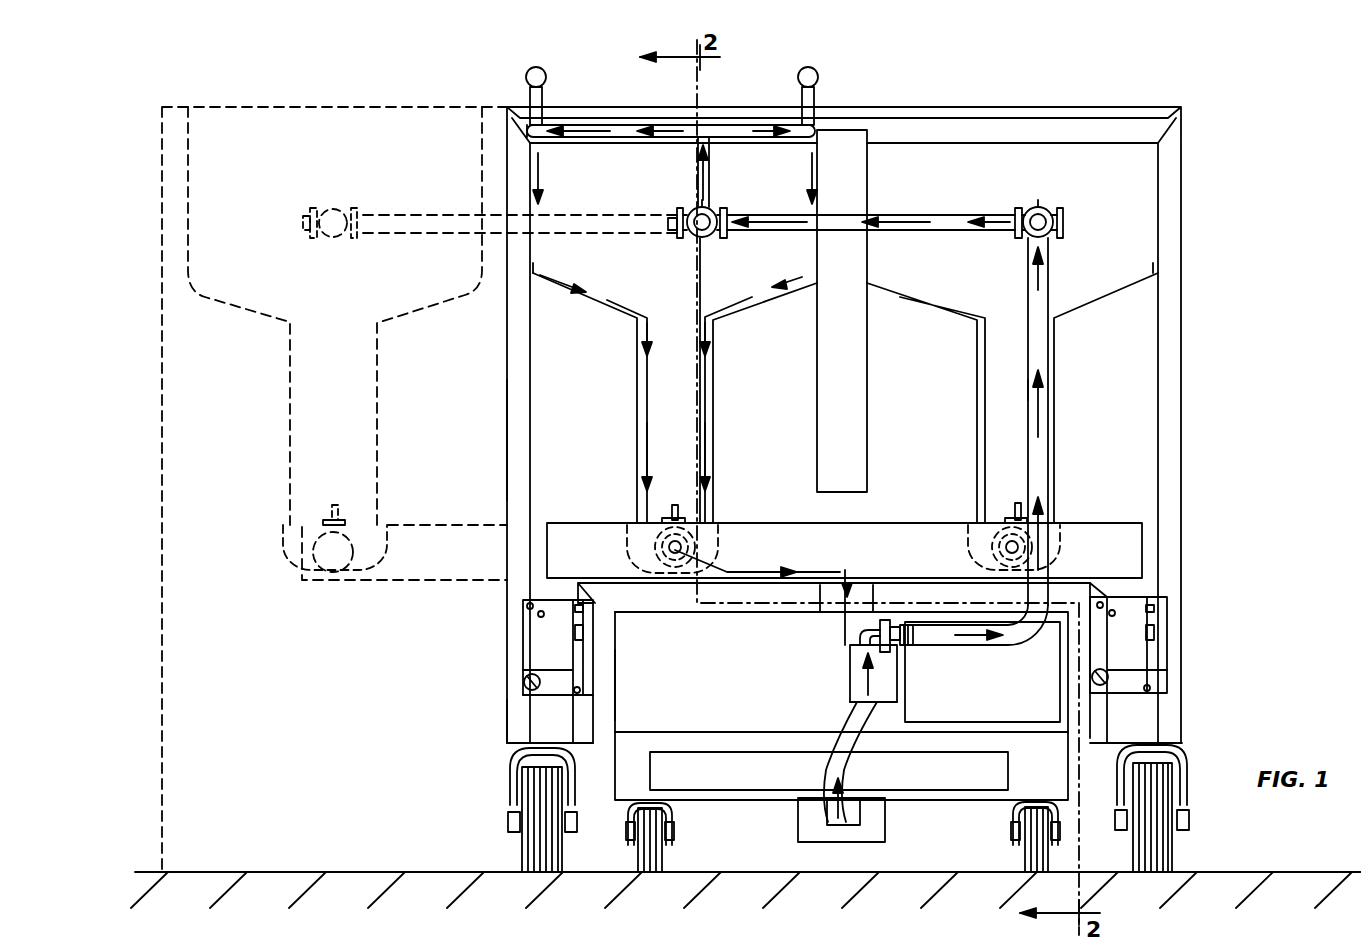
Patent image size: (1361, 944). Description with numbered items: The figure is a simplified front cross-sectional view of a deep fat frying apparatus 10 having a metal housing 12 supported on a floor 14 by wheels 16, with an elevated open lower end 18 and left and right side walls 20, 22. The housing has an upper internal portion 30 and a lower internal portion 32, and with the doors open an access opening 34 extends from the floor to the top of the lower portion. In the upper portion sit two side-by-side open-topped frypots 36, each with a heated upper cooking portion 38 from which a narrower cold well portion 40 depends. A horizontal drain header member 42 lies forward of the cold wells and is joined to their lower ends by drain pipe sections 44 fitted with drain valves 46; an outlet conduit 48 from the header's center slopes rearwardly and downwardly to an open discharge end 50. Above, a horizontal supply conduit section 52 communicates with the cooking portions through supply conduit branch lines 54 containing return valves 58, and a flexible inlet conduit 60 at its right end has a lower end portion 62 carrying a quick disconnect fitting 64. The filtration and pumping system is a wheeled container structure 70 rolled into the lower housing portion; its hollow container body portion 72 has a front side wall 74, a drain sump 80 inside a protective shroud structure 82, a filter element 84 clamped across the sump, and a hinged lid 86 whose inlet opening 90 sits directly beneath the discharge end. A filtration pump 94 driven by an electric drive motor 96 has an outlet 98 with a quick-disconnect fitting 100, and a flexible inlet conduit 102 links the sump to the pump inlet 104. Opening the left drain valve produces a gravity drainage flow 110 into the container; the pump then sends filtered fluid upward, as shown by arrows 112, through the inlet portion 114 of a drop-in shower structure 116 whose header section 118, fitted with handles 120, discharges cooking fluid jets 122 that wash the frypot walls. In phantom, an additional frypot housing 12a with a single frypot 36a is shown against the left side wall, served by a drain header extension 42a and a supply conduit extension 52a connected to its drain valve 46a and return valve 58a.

The deep fat frying apparatus 10 is at (1205, 120).
The housing 12 is at (504, 415).
The additional floor mounted frypot housing 12a is at (162, 452).
The floor 14 is at (1334, 872).
The wheels 16 is at (520, 857).
The open lower end 18 is at (507, 746).
The left side wall 20 is at (508, 442).
The right side wall 22 is at (1182, 406).
The upper internal portion 30 is at (556, 380).
The lower internal portion 32 is at (600, 648).
The access opening 34 is at (600, 708).
The frypots 36 is at (750, 321).
The additional frypot 36a is at (254, 318).
The upper cooking portion 38 is at (600, 314).
The cold well portion 40 is at (713, 406).
The drain header member 42 is at (1138, 523).
The drain header extension 42a is at (418, 525).
The drain pipe sections 44 is at (640, 556).
The drain valves 46 is at (665, 518).
The drain valve of additional frypot 46a is at (353, 492).
The outlet conduit 48 is at (820, 600).
The open discharge end 50 is at (850, 600).
The horizontal supply conduit section 52 is at (952, 215).
The supply conduit extension 52a is at (392, 215).
The supply conduit branch lines 54 is at (688, 238).
The return valves 58 is at (719, 213).
The return valve of additional frypot 58a is at (356, 208).
The flexible inlet conduit 60 is at (1027, 393).
The lower end portion 62 is at (1014, 645).
The quick disconnect fitting 64 is at (930, 647).
The cooking fluid receiving container structure 70 is at (786, 810).
The container body portion 72 is at (1090, 653).
The front side wall 74 is at (710, 694).
The drain sump 80 is at (862, 815).
The protective shroud structure 82 is at (886, 835).
The filter element 84 is at (1008, 771).
The lid 86 is at (670, 614).
The inlet opening 90 is at (863, 613).
The cooking fluid filtration pump 94 is at (850, 685).
The electric drive motor 96 is at (1023, 706).
The pump outlet 98 is at (862, 630).
The quick-disconnect fitting 100 is at (889, 650).
The flexible inlet conduit 102 is at (842, 722).
The pump inlet 104 is at (897, 703).
The gravity drainage flow 110 is at (742, 570).
The arrows 112 is at (883, 215).
The inlet portion 114 is at (711, 180).
The cooking fluid shower structure 116 is at (592, 120).
The header section 118 is at (545, 123).
The handles 120 is at (527, 70).
The cooking fluid jets 122 is at (546, 264).